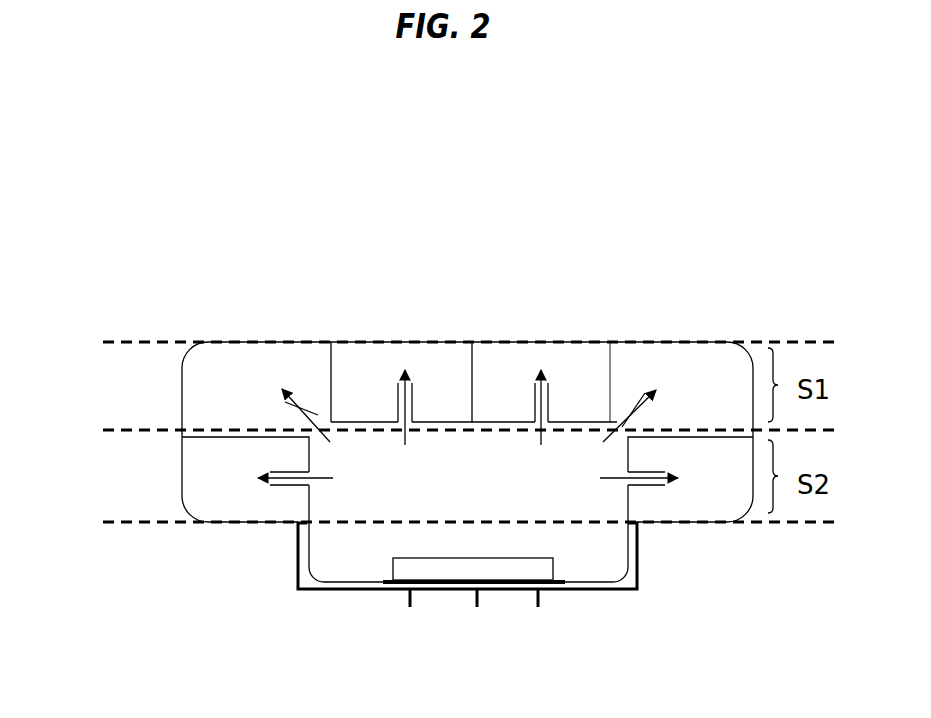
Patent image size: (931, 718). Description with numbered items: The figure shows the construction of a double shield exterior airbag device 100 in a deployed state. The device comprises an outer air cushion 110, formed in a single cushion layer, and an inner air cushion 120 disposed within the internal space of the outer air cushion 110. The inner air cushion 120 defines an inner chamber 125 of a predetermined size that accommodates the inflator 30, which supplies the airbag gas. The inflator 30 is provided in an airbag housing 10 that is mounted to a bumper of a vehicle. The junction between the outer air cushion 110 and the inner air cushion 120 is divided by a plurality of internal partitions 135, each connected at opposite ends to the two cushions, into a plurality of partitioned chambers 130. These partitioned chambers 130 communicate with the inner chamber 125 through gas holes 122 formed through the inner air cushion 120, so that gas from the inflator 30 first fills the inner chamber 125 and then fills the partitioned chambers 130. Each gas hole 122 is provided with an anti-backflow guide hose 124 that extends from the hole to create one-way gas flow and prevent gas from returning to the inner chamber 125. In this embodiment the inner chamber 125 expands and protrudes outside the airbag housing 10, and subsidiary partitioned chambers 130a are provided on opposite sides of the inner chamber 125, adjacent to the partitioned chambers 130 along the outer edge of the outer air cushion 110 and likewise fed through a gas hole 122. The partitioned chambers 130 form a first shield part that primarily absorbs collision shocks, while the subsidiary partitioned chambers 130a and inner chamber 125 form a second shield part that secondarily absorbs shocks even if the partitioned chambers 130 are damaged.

The double shield exterior airbag device 100 is at (663, 218).
The outer air cushion 110 is at (182, 393).
The inner air cushion 120 is at (309, 497).
The gas hole 122 is at (650, 393).
The anti-backflow guide hose 124 is at (647, 417).
The inner chamber 125 is at (573, 503).
The partitioned chambers 130 is at (265, 353).
The subsidiary partitioned chambers 130a is at (203, 500).
The internal partitions 135 is at (335, 358).
The airbag housing 10 is at (332, 588).
The inflator 30 is at (453, 568).